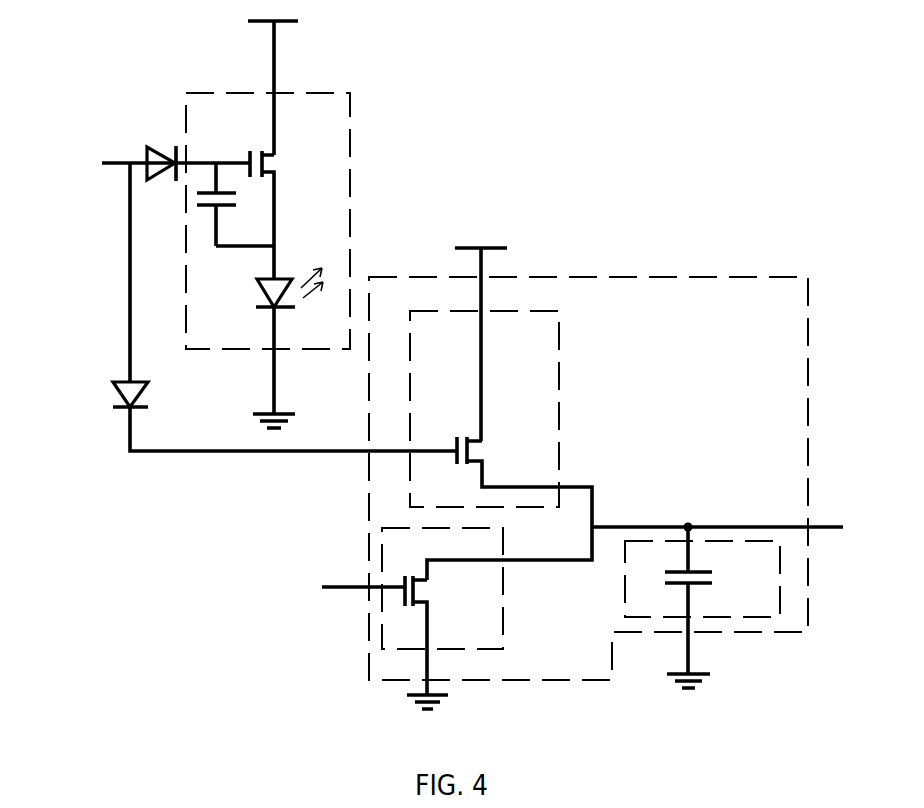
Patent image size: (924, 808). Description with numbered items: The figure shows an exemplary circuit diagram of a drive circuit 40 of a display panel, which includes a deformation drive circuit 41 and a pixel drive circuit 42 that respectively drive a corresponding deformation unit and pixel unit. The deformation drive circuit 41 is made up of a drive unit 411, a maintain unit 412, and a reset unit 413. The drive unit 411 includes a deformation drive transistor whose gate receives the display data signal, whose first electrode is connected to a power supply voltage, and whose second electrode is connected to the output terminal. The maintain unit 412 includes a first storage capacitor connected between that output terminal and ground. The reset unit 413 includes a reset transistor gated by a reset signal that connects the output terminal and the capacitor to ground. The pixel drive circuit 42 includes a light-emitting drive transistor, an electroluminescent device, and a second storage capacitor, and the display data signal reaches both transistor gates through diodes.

The drive circuit 40 is at (462, 95).
The deformation drive circuit 41 is at (645, 275).
The pixel drive circuit 42 is at (350, 205).
The drive unit 411 is at (557, 369).
The maintain unit 412 is at (705, 537).
The reset unit 413 is at (503, 618).